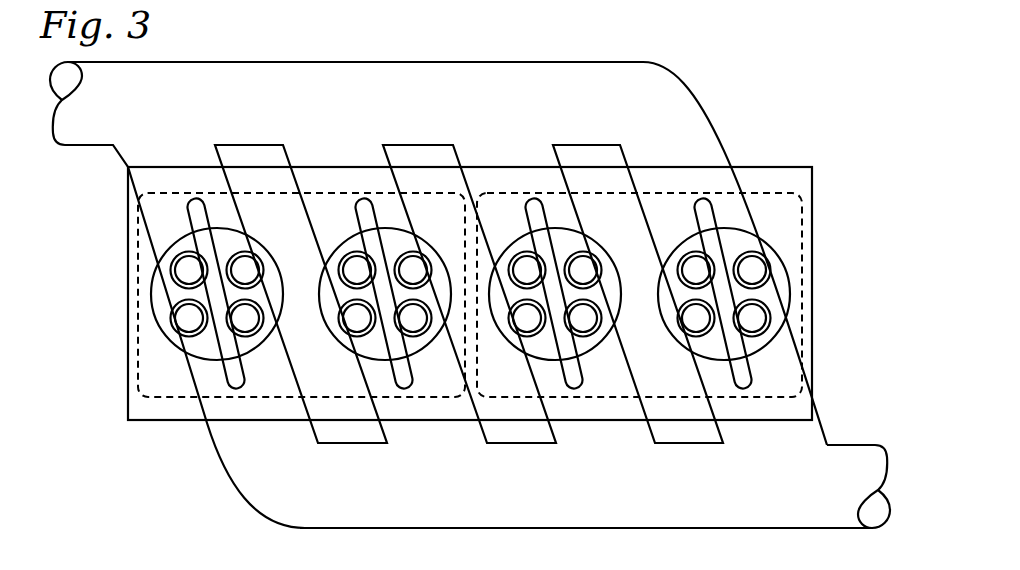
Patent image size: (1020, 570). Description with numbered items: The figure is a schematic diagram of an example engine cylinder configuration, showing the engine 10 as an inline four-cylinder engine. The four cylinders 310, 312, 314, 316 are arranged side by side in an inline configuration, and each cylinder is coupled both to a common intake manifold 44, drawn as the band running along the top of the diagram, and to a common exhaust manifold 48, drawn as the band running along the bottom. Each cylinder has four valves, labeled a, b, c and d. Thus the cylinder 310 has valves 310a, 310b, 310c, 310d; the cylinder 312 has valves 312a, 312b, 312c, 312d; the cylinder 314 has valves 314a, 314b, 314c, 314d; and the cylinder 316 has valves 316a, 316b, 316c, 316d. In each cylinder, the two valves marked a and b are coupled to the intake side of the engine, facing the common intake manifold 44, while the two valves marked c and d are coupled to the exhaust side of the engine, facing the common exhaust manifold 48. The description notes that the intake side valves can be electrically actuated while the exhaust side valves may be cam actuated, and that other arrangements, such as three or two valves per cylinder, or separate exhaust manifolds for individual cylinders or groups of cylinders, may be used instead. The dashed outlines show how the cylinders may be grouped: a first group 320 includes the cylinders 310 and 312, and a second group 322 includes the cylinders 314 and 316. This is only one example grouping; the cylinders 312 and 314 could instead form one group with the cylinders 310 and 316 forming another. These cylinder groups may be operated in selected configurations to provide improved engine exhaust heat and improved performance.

The engine 10 is at (770, 167).
The common intake manifold 44 is at (420, 112).
The common exhaust manifold 48 is at (565, 500).
The cylinder group 320 is at (192, 190).
The cylinder group 322 is at (530, 190).
The cylinder 310 is at (194, 293).
The valve 310a is at (186, 268).
The valve 310b is at (300, 252).
The valve 310c is at (186, 318).
The valve 310d is at (247, 318).
The cylinder 312 is at (377, 325).
The valve 312a is at (357, 268).
The valve 312b is at (467, 252).
The valve 312c is at (357, 320).
The valve 312d is at (449, 329).
The cylinder 314 is at (546, 325).
The valve 314a is at (528, 268).
The valve 314b is at (636, 252).
The valve 314c is at (528, 320).
The valve 314d is at (618, 329).
The cylinder 316 is at (736, 293).
The valve 316a is at (697, 268).
The valve 316b is at (755, 270).
The valve 316c is at (697, 320).
The valve 316d is at (755, 318).